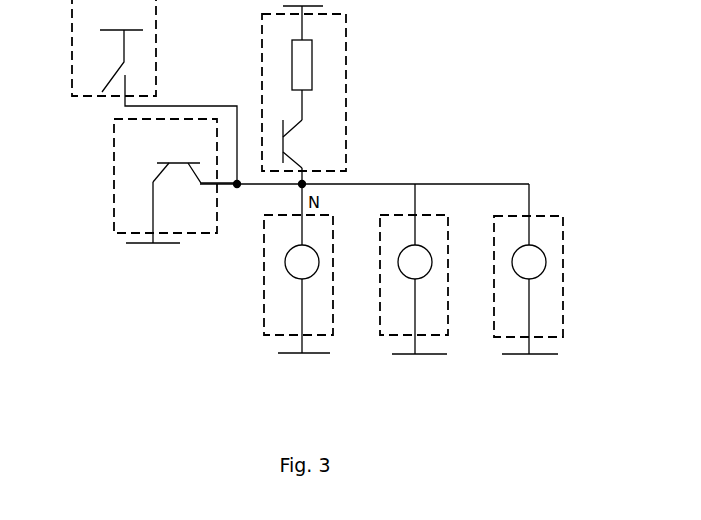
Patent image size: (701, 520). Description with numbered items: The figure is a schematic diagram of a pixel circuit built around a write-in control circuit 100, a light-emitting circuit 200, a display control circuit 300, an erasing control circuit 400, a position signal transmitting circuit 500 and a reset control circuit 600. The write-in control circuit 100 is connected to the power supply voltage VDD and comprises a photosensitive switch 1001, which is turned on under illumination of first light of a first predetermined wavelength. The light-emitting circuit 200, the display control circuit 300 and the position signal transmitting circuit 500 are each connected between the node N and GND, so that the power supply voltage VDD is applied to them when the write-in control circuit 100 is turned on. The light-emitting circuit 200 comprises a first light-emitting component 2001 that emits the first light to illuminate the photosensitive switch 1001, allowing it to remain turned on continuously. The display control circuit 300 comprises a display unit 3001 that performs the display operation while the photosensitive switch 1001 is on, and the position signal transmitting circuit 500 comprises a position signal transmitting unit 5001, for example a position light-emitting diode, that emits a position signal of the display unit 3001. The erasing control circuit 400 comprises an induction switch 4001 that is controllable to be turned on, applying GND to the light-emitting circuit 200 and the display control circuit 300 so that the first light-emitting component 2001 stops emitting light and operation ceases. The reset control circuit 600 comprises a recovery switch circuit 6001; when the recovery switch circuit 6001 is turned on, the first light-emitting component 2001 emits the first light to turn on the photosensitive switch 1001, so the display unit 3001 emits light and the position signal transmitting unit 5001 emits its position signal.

The write-in control circuit 100 is at (318, 100).
The photosensitive switch 1001 is at (298, 143).
The light-emitting circuit 200 is at (308, 313).
The first light-emitting component 2001 is at (305, 262).
The display control circuit 300 is at (422, 313).
The display unit 3001 is at (419, 262).
The erasing control circuit 400 is at (195, 221).
The induction switch 4001 is at (180, 159).
The position signal transmitting circuit 500 is at (536, 313).
The position signal transmitting unit 5001 is at (533, 262).
The reset control circuit 600 is at (138, 90).
The recovery switch circuit 6001 is at (123, 71).